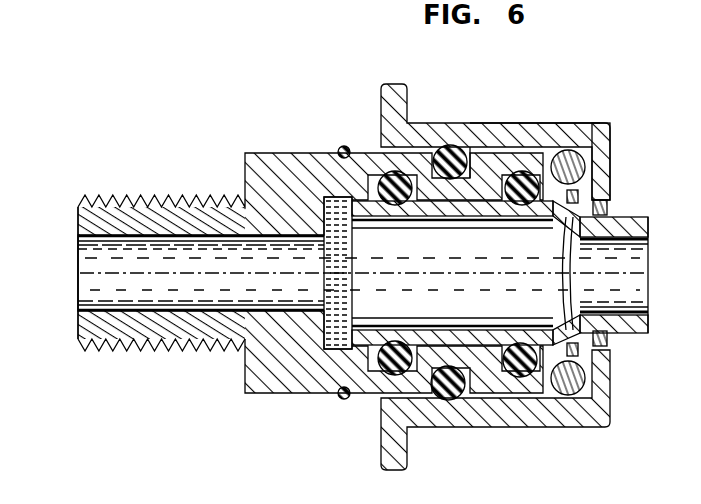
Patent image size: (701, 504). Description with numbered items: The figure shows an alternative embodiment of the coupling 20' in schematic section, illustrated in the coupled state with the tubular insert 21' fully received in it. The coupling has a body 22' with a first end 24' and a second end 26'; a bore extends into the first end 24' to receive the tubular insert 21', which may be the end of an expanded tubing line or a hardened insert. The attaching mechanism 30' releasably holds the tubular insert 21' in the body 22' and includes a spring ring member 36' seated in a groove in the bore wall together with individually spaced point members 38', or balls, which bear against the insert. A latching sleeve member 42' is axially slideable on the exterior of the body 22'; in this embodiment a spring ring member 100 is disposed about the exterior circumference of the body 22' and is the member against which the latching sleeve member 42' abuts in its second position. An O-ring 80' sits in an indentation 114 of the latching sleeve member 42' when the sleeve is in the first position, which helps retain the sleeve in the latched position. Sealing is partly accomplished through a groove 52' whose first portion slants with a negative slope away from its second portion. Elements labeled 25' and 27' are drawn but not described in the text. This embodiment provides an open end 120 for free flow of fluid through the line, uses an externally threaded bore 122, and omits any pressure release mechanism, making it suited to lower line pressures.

The coupling 20' is at (348, 244).
The body 22' is at (310, 256).
The second end 26' is at (49, 273).
The open end 120 is at (122, 281).
The externally threaded bore 122 is at (168, 356).
The spring ring member 100 is at (346, 146).
The O-ring 80' is at (448, 241).
The indentation 114 is at (474, 150).
The latching sleeve member 42' is at (535, 102).
The attaching mechanism 30' is at (511, 276).
The point members 38' is at (610, 258).
The first end 24' is at (634, 161).
The spring ring member 36' is at (615, 269).
The inner sleeve 25' is at (438, 273).
The flared tube end 27' is at (617, 284).
The tubular insert 21' is at (621, 302).
The groove 52' is at (363, 393).